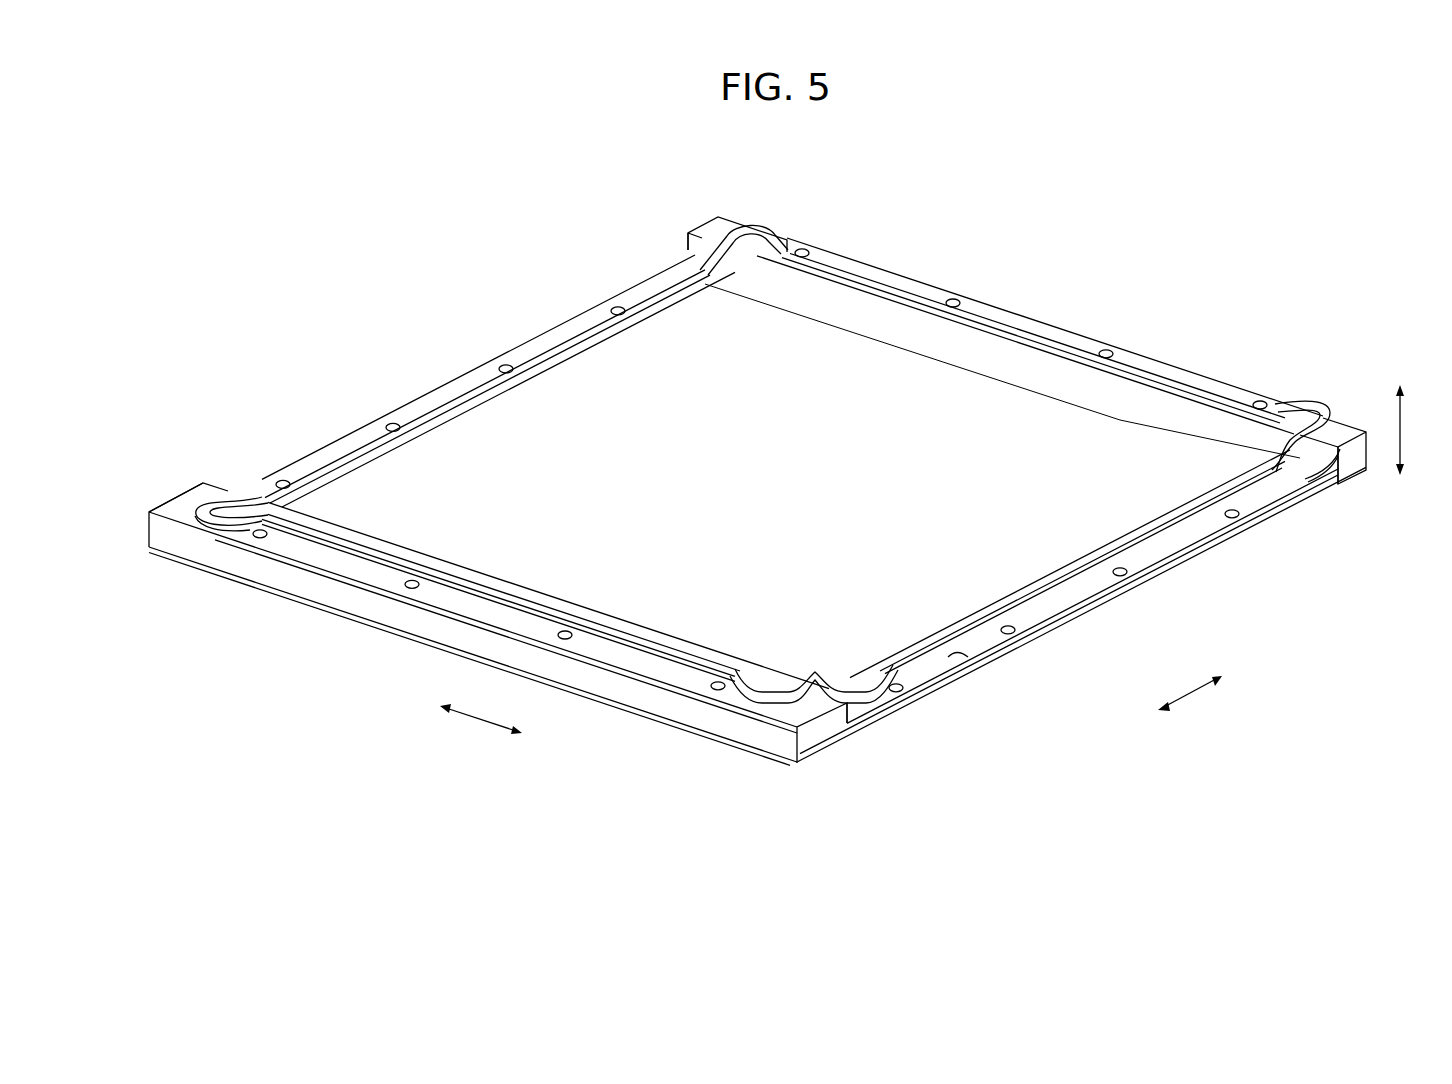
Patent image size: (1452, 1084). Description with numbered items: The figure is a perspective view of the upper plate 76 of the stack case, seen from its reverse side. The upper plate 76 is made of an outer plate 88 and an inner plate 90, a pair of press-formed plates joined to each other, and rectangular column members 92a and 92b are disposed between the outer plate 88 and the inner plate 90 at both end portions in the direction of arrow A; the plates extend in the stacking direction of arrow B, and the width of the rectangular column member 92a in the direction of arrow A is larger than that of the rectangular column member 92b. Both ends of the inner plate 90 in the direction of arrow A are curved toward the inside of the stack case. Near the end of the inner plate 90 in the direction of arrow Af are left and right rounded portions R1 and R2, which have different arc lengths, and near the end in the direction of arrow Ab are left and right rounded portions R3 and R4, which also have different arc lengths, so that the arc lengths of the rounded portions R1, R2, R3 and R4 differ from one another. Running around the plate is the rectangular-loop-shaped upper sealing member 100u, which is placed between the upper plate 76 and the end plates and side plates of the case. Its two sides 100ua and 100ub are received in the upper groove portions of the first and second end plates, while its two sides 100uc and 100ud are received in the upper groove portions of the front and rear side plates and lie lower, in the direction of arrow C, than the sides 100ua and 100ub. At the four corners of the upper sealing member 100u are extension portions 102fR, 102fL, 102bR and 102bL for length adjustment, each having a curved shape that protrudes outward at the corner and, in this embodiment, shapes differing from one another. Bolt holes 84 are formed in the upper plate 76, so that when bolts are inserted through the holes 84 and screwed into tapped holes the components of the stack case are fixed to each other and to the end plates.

The upper plate 76 is at (431, 274).
The bolt hole 84 is at (566, 627).
The outer plate 88 is at (872, 733).
The inner plate 90 is at (960, 662).
The rectangular column member 92a is at (626, 684).
The rectangular column member 92b is at (1344, 468).
The upper sealing member 100u is at (1010, 318).
The side of upper sealing member 100ua is at (556, 356).
The side of upper sealing member 100ub is at (1055, 592).
The side of upper sealing member 100uc is at (363, 553).
The side of upper sealing member 100ud is at (918, 289).
The extension portion 102fL is at (219, 538).
The extension portion 102fR is at (750, 702).
The extension portion 102bL is at (757, 228).
The extension portion 102bR is at (1306, 404).
The rounded portion R1 is at (873, 692).
The rounded portion R2 is at (222, 482).
The rounded portion R3 is at (1304, 465).
The rounded portion R4 is at (684, 258).
The direction of arrow A is at (1190, 686).
The direction of arrow Ab is at (1235, 669).
The direction of arrow Af is at (1143, 719).
The direction of arrow B is at (481, 714).
The direction of arrow C is at (1406, 430).